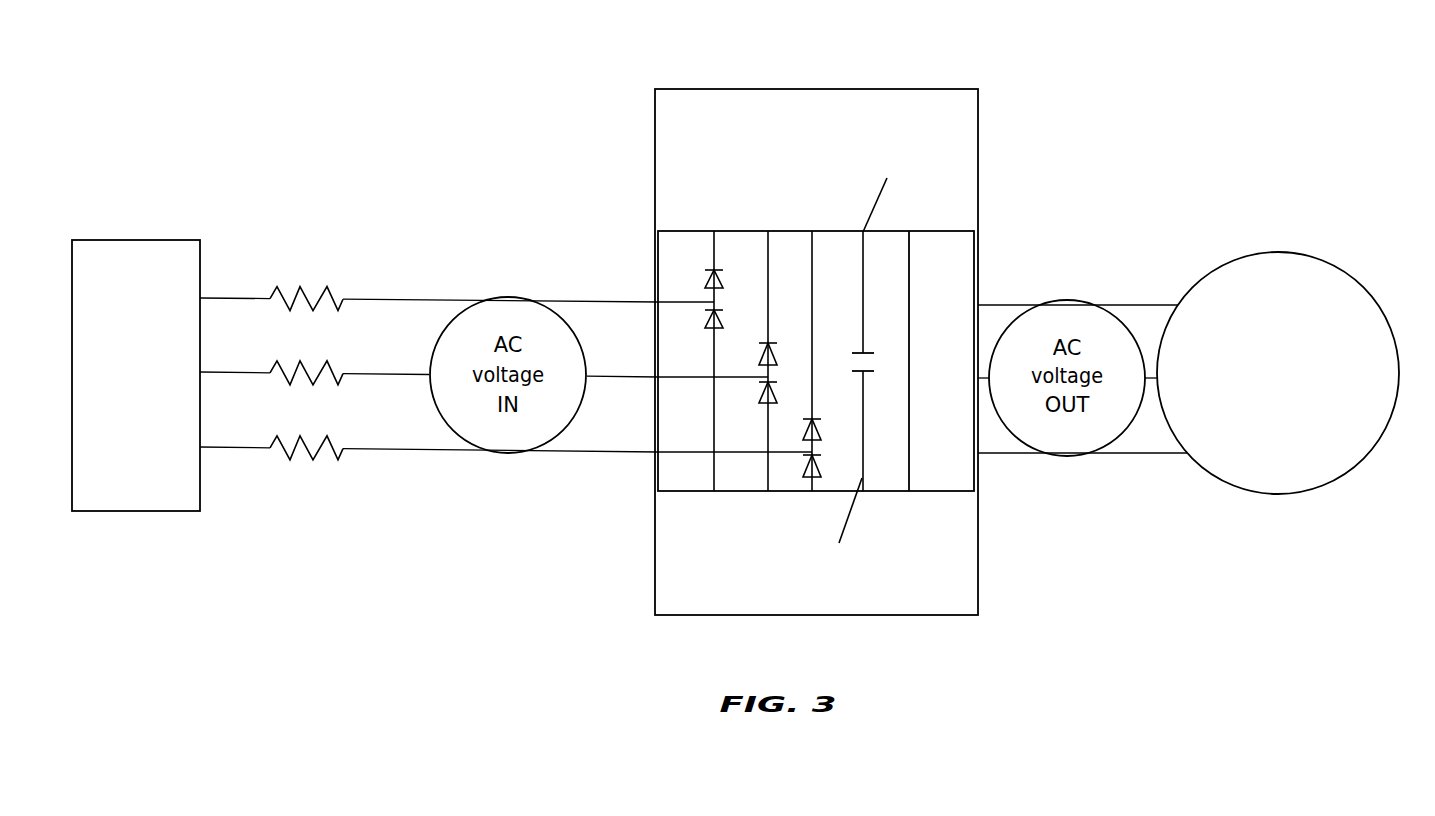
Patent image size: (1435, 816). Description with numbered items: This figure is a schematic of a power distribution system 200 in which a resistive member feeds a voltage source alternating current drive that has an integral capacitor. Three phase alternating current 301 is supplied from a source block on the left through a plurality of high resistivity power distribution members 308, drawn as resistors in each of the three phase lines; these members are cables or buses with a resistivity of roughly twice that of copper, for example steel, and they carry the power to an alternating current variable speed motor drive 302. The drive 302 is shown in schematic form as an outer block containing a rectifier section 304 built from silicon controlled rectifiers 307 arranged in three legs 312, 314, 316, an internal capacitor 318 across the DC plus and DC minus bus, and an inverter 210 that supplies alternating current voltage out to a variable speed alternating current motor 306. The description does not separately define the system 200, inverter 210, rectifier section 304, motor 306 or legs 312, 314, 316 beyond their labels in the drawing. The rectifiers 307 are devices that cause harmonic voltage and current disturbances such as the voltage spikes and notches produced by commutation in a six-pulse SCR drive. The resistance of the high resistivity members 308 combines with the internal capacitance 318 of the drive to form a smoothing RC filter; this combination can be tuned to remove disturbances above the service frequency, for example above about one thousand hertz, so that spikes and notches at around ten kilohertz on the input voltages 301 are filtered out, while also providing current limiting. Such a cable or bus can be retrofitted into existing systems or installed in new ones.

The variable speed motor drive system 200 is at (1152, 84).
The inverter 210 is at (968, 241).
The three phase alternating current 301 is at (185, 502).
The alternating current variable speed motor drive 302 is at (658, 132).
The rectifier 304 is at (667, 260).
The variable speed AC motor 306 is at (1218, 282).
The silicon controlled rectifiers 307 is at (717, 283).
The high resistivity power distribution members 308 is at (332, 298).
The rectifier leg 312 is at (812, 243).
The rectifier leg 314 is at (715, 482).
The rectifier leg 316 is at (768, 489).
The internal capacitor 318 is at (867, 480).